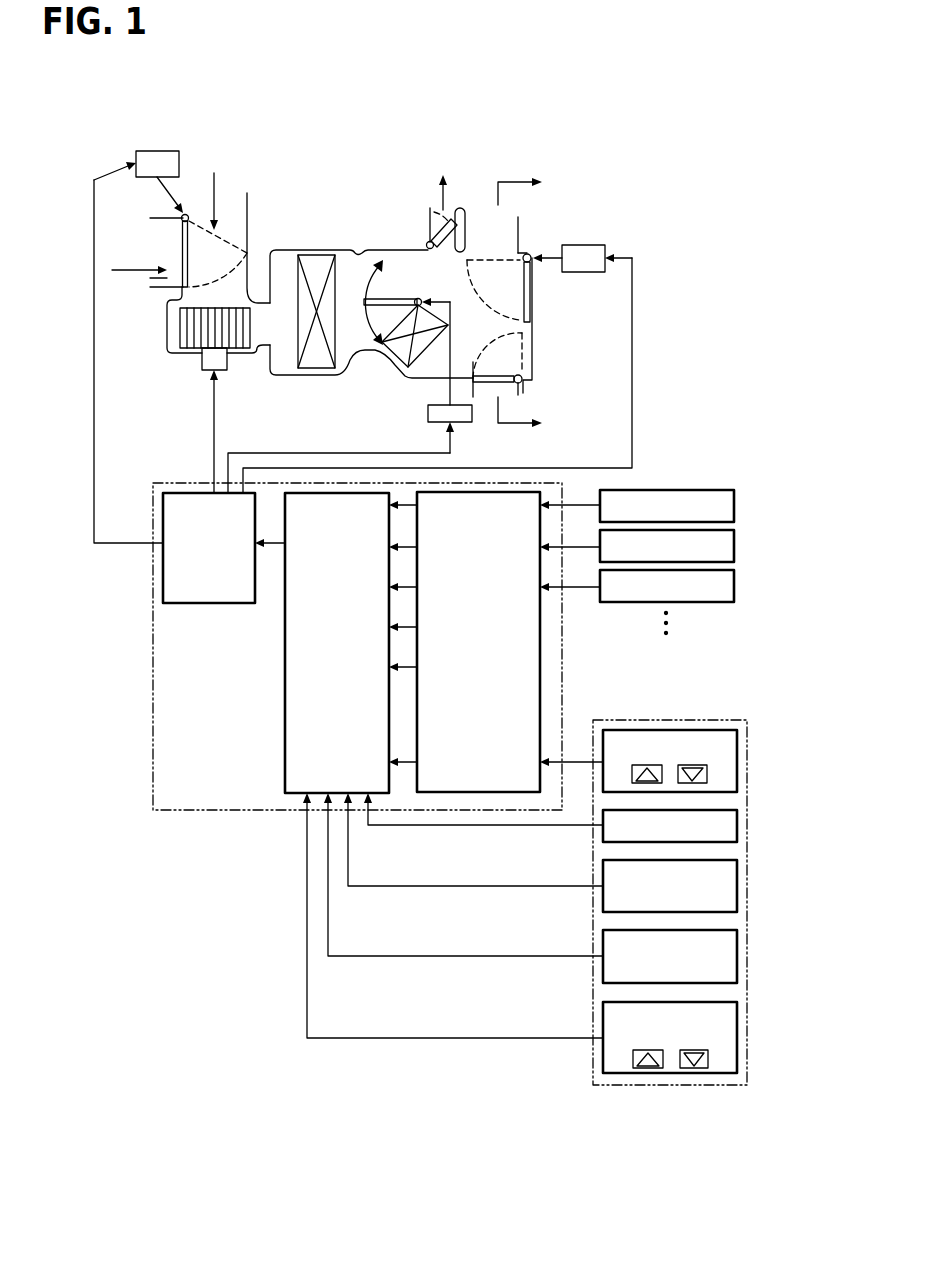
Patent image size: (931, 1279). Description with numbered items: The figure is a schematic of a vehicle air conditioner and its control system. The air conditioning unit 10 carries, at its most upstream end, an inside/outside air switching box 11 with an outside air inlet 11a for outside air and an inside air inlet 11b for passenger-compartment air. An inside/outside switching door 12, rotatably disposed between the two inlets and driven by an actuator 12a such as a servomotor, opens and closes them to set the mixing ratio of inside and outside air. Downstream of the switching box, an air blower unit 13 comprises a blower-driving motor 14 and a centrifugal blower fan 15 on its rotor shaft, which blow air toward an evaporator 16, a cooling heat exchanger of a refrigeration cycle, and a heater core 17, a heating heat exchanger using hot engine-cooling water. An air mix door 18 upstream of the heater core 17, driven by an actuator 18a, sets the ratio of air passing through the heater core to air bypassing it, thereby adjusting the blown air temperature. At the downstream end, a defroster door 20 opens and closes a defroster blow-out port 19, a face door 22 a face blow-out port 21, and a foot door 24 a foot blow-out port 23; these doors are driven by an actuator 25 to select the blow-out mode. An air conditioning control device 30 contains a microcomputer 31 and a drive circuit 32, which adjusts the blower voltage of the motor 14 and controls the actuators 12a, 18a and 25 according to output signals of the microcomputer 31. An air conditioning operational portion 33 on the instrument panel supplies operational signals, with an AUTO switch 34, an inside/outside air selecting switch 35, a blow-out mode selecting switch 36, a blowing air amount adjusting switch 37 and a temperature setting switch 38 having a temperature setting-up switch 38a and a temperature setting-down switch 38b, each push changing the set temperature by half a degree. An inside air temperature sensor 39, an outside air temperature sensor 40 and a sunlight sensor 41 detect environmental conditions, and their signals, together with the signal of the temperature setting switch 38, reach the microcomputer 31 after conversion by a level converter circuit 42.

The air conditioning unit 10 is at (321, 242).
The inside/outside air switching box 11 is at (181, 215).
The outside air inlet 11a is at (239, 212).
The inside air inlet 11b is at (162, 285).
The inside/outside switching door 12 is at (180, 222).
The actuator 12a is at (140, 151).
The air blower unit 13 is at (167, 355).
The blower-driving motor 14 is at (207, 367).
The centrifugal blower fan 15 is at (182, 330).
The evaporator 16 is at (320, 357).
The heater core 17 is at (403, 350).
The air mix door 18 is at (390, 296).
The actuator 18a is at (428, 413).
The defroster blow-out port 19 is at (433, 212).
The defroster door 20 is at (449, 221).
The face blow-out port 21 is at (493, 243).
The face door 22 is at (533, 296).
The foot blow-out port 23 is at (488, 388).
The foot door 24 is at (500, 372).
The actuator 25 is at (587, 250).
The air conditioning control device 30 is at (208, 820).
The microcomputer 31 is at (285, 692).
The drive circuit 32 is at (212, 607).
The air conditioning operational portion 33 is at (747, 722).
The AUTO switch 34 is at (737, 822).
The inside/outside air selecting switch 35 is at (737, 882).
The blow-out mode selecting switch 36 is at (737, 952).
The blowing air amount adjusting switch 37 is at (737, 1030).
The temperature setting switch 38 is at (672, 769).
The temperature setting-up switch 38a is at (657, 790).
The temperature setting-down switch 38b is at (708, 773).
The inside air temperature sensor 39 is at (734, 505).
The outside air temperature sensor 40 is at (734, 545).
The sunlight sensor 41 is at (734, 585).
The level converter circuit 42 is at (540, 688).